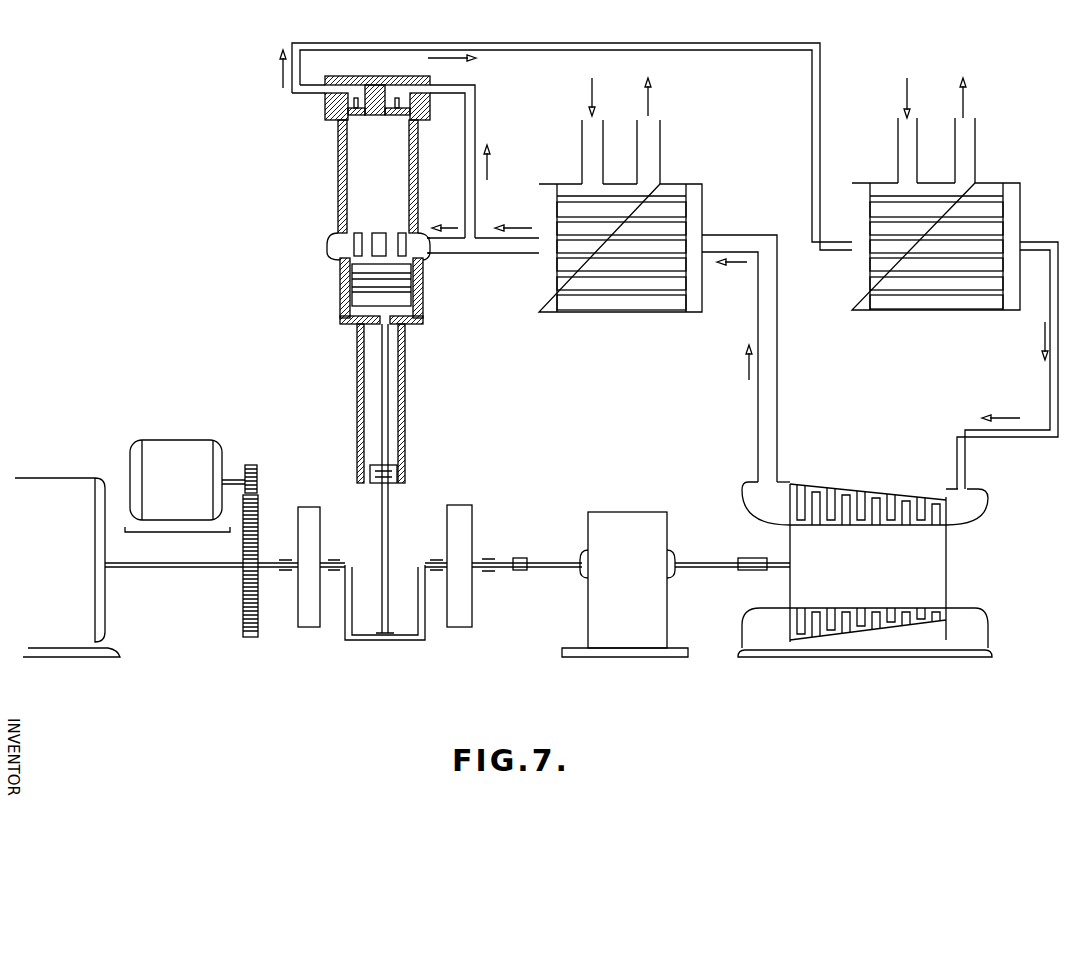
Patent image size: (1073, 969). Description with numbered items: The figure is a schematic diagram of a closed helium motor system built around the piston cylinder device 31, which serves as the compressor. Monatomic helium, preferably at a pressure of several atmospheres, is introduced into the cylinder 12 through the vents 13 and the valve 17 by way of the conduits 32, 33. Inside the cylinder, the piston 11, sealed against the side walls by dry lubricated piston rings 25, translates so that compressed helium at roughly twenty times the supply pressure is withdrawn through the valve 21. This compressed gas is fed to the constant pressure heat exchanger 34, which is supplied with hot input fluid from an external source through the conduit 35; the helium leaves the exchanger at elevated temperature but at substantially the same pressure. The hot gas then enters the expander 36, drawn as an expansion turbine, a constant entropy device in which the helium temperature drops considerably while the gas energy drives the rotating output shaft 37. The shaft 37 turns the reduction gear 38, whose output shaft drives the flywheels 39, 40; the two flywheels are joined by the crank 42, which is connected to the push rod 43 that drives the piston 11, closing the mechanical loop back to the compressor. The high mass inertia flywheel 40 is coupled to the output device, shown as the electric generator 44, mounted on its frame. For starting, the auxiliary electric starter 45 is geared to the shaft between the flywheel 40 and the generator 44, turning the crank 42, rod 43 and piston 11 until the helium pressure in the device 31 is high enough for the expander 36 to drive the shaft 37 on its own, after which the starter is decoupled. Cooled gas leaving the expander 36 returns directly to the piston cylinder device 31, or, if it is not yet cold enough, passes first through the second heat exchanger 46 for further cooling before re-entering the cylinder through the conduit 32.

The piston 11 is at (365, 301).
The cylinder 12 is at (340, 210).
The vents 13 is at (405, 243).
The valve 17 is at (398, 114).
The valve 21 is at (348, 99).
The piston rings 25 is at (421, 288).
The piston cylinder device 31 is at (297, 282).
The conduit 32 is at (474, 254).
The conduit 33 is at (476, 206).
The constant pressure heat exchanger 34 is at (862, 308).
The conduit 35 is at (897, 142).
The expander 36 is at (935, 540).
The rotating output shaft 37 is at (708, 567).
The reduction gear 38 is at (633, 522).
The flywheel 39 is at (466, 519).
The high mass inertia flywheel 40 is at (308, 513).
The crank 42 is at (368, 641).
The push rod 43 is at (381, 535).
The electric generator 44 is at (80, 606).
The auxiliary electric starter 45 is at (158, 453).
The heat exchanger 46 is at (550, 308).